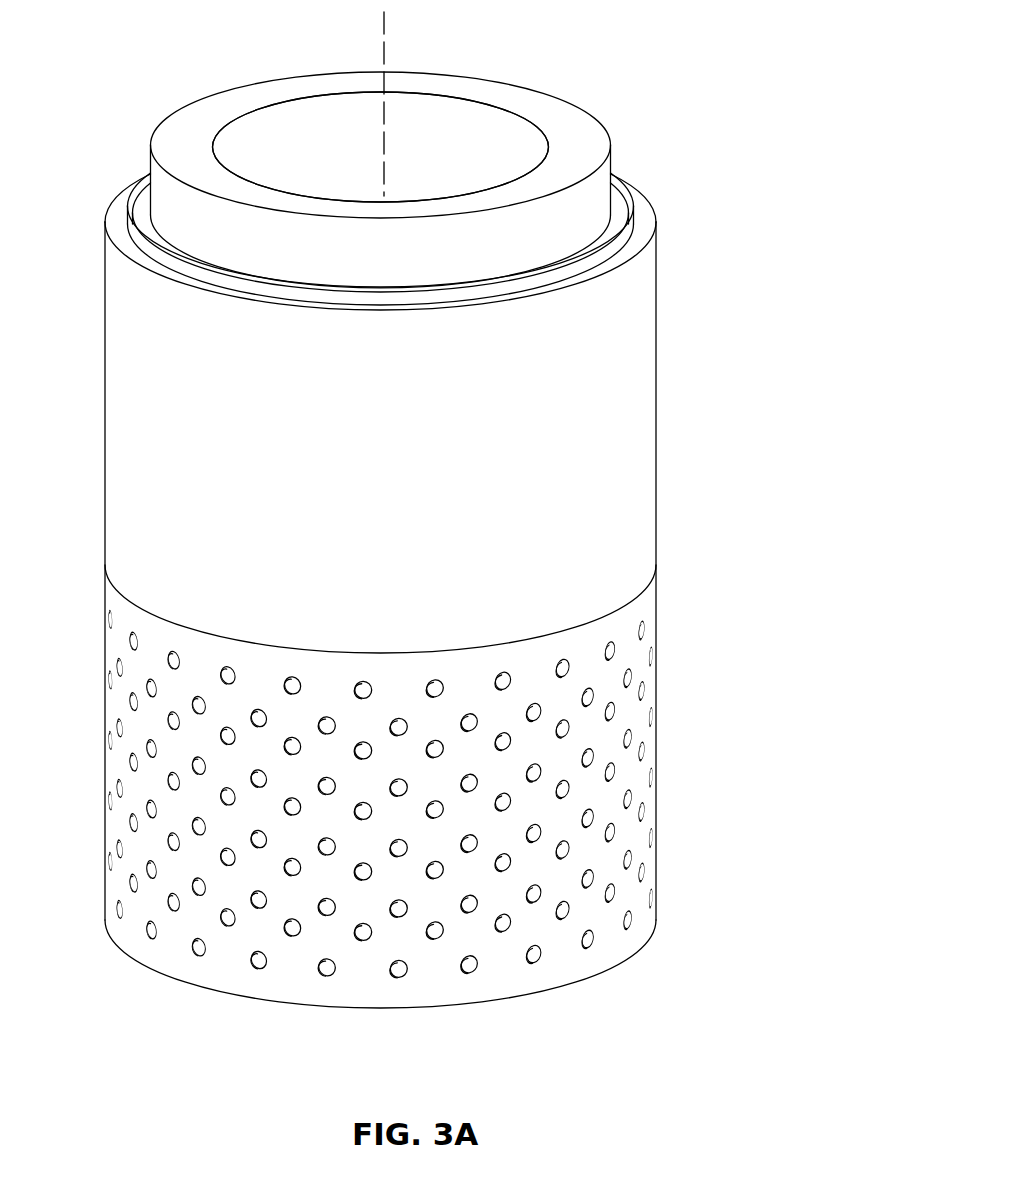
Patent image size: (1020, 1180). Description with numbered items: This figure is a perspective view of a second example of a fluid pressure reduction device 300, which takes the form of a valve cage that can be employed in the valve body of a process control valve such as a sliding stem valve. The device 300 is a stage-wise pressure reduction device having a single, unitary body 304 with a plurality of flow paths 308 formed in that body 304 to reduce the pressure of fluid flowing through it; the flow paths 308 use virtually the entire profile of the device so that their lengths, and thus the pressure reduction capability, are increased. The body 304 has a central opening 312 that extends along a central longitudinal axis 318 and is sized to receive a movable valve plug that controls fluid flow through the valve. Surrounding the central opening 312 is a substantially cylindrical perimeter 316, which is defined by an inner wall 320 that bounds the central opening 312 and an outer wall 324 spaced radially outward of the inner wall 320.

The fluid pressure reduction device 300 is at (436, 532).
The unitary body 304 is at (633, 451).
The flow paths 308 is at (491, 956).
The central opening 312 is at (397, 162).
The substantially cylindrical perimeter 316 is at (566, 168).
The central longitudinal axis 318 is at (385, 43).
The inner wall 320 is at (539, 126).
The outer wall 324 is at (607, 135).